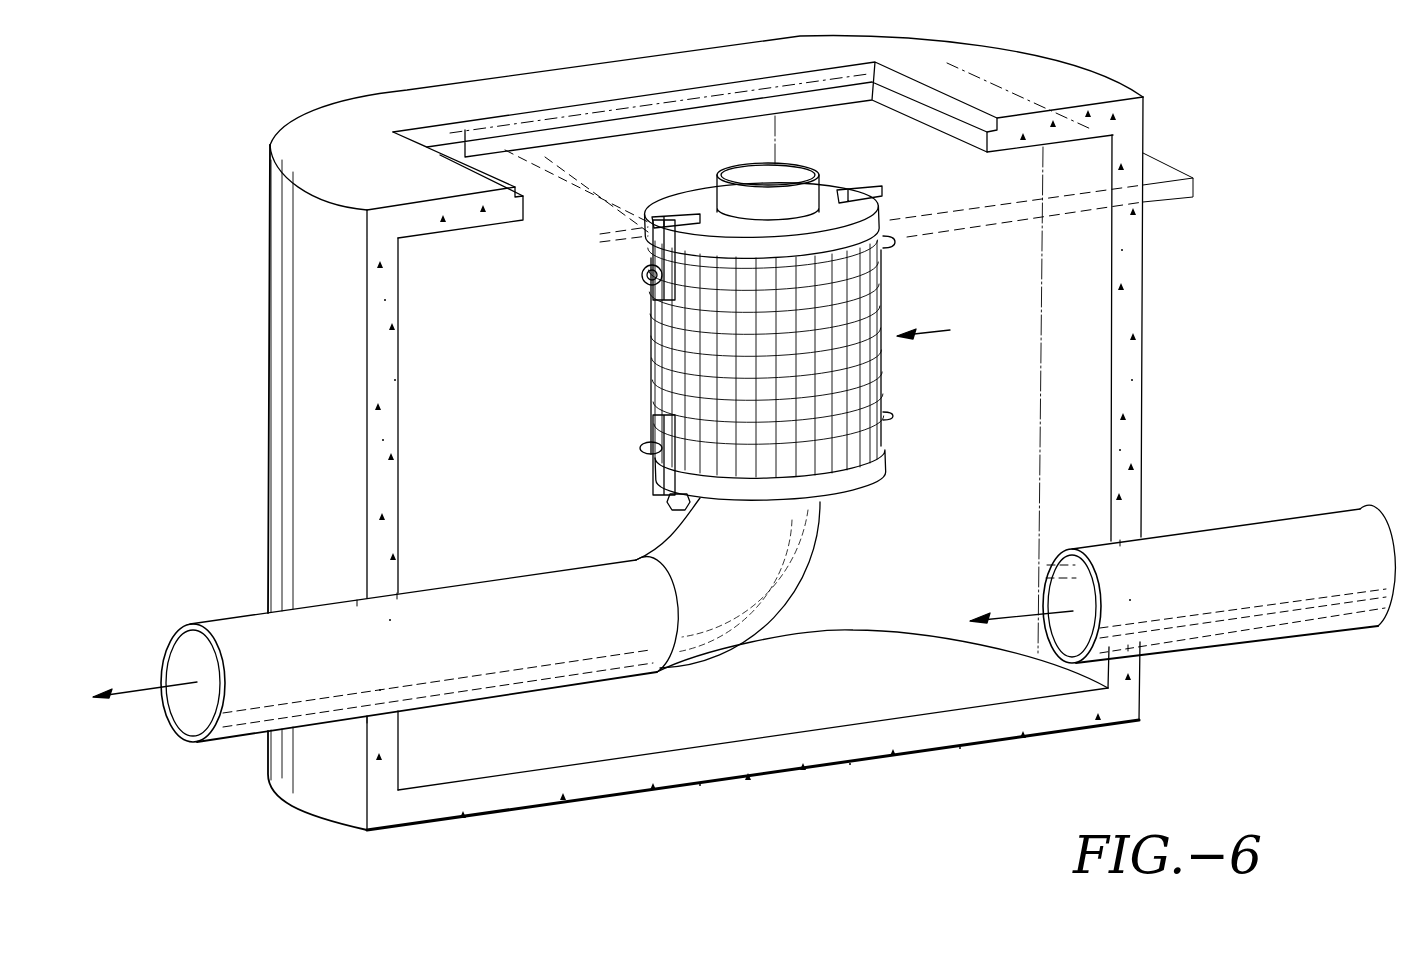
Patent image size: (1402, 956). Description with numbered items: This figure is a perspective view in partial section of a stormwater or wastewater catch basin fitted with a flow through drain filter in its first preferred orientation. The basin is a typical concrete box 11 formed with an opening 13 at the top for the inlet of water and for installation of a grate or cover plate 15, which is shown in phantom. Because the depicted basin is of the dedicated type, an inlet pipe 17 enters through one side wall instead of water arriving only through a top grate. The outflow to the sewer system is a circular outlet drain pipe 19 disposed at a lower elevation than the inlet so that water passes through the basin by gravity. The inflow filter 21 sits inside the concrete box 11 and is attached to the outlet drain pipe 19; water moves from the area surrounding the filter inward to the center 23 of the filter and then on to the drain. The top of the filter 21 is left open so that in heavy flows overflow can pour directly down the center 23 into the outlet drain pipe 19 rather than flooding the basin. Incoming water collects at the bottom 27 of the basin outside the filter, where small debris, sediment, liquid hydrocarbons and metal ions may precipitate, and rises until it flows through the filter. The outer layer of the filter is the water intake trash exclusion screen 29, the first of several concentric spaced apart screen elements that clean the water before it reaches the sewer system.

The concrete box 11 is at (1142, 337).
The opening 13 is at (440, 138).
The cover plate 15 is at (1195, 187).
The inlet pipe 17 is at (1253, 545).
The outlet drain pipe 19 is at (475, 615).
The inflow filter 21 is at (951, 521).
The center 23 is at (755, 177).
The bottom 27 is at (928, 688).
The water intake trash exclusion screen 29 is at (648, 356).